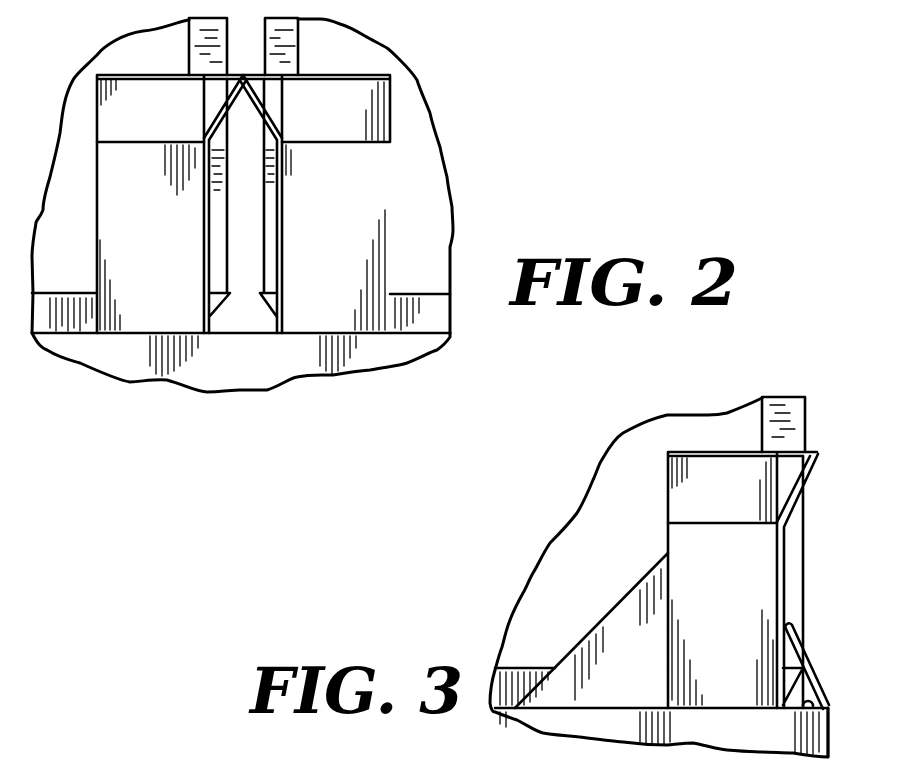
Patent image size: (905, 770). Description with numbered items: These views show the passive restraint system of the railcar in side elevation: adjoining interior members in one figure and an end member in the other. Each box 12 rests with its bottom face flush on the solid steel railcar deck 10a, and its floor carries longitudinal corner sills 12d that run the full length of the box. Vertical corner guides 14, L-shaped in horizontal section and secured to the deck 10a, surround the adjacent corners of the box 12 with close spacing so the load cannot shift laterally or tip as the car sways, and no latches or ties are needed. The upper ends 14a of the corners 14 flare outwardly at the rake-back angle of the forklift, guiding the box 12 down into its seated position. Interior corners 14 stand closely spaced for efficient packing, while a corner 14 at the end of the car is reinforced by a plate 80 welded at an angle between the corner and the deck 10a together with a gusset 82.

In FIG. 2, the box 12 is at (145, 32).
In FIG. 3, the box 12 is at (600, 463).
In FIG. 2, the corner sill 12d is at (422, 290).
In FIG. 3, the corner sill 12d is at (522, 667).
In FIG. 2, the corner guide 14 is at (162, 234).
In FIG. 3, the corner guide 14 is at (755, 563).
In FIG. 2, the upper end of corner guide 14a is at (166, 119).
In FIG. 3, the upper end of corner guide 14a is at (742, 487).
In FIG. 3, the gusset 82 is at (632, 672).
In FIG. 3, the plate 80 is at (812, 673).
In FIG. 3, the railcar deck 10a is at (831, 720).